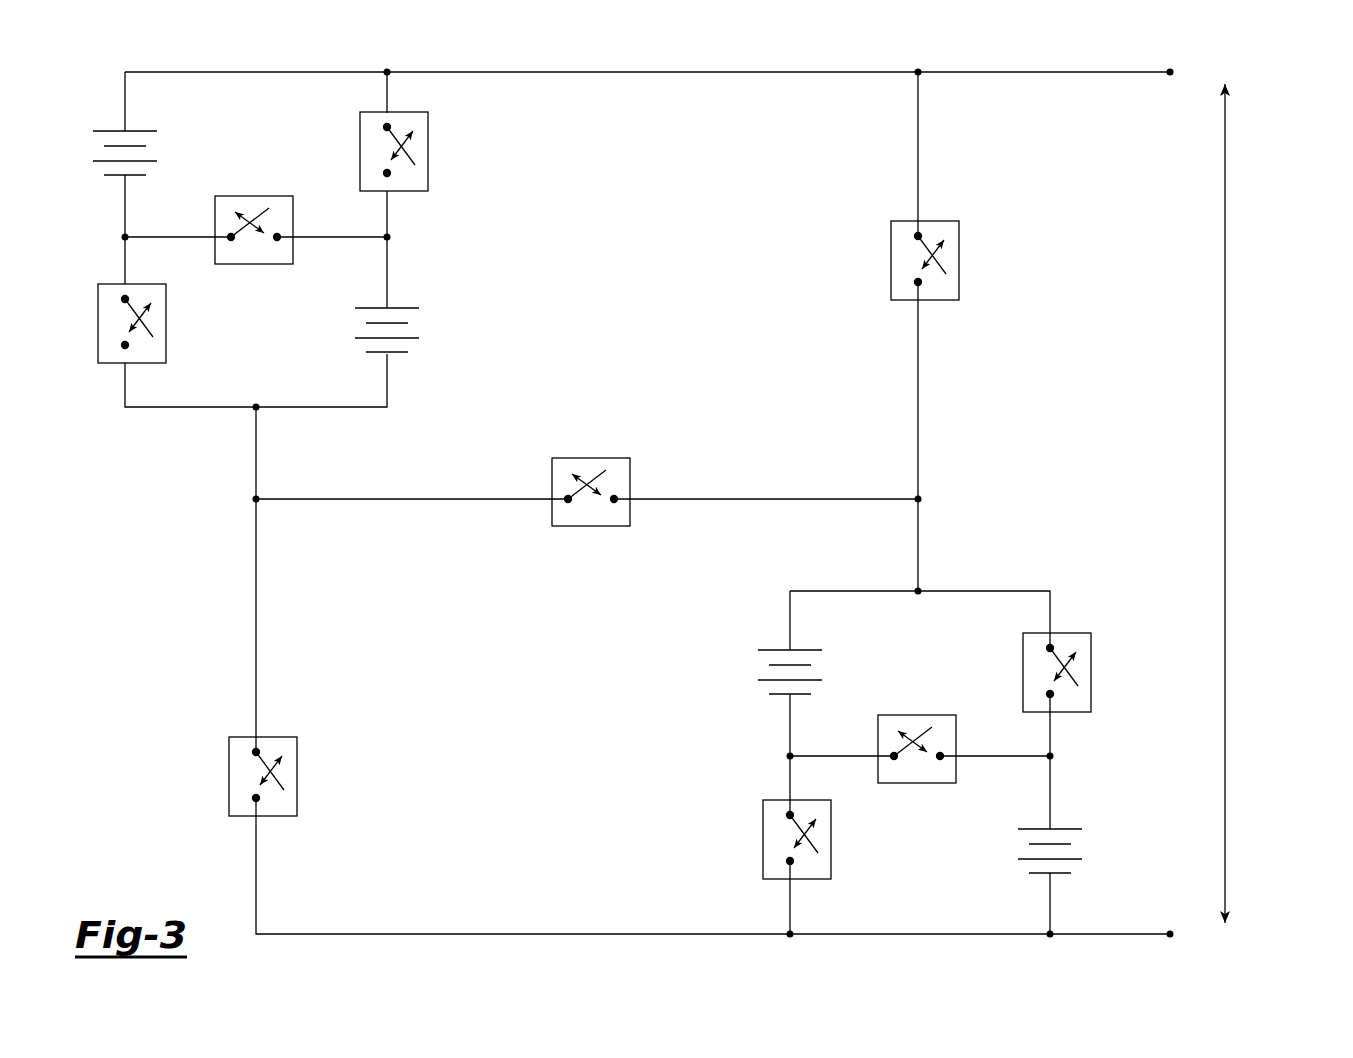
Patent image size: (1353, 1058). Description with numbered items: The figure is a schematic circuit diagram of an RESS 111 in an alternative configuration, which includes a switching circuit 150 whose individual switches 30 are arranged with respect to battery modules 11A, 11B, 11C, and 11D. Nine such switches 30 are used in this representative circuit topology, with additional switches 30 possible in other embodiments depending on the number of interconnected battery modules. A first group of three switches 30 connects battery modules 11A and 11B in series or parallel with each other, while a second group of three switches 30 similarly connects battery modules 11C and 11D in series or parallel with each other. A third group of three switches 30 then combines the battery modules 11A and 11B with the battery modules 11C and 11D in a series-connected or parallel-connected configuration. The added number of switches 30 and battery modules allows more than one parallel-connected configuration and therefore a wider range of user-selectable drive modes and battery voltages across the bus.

The battery module 11A is at (102, 122).
The battery module 11B is at (403, 360).
The battery module 11C is at (765, 638).
The battery module 11D is at (1067, 819).
The switch 30 is at (636, 495).
The RESS 111 is at (1258, 102).
The switching circuit 150 is at (992, 433).